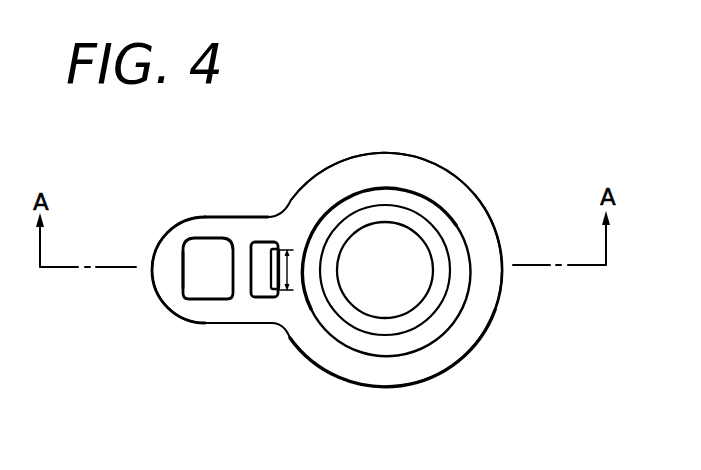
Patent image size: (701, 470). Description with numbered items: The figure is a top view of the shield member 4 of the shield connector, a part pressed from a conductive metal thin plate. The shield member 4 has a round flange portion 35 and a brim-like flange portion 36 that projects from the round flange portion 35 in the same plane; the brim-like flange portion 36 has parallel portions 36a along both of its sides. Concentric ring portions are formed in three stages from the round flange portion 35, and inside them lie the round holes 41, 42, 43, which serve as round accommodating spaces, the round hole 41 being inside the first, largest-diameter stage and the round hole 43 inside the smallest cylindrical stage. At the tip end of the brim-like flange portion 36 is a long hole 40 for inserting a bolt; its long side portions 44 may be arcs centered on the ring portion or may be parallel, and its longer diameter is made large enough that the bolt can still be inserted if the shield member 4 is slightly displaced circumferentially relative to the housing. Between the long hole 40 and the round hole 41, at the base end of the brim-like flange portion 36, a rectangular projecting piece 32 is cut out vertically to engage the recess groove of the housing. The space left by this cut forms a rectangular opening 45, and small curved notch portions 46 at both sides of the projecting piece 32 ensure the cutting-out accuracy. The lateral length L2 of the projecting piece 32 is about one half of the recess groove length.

The shield member 4 is at (480, 166).
The projecting piece 32 is at (259, 276).
The round flange portion 35 is at (490, 321).
The brim-like flange portion 36 is at (160, 298).
The parallel portions 36a is at (232, 217).
The long hole 40 is at (200, 289).
The round hole 41 is at (425, 338).
The round hole 42 is at (383, 332).
The round hole 43 is at (367, 311).
The long side portions 44 is at (233, 270).
The rectangular opening 45 is at (260, 242).
The curved notch portions 46 is at (277, 248).
The length of the projecting piece L2 is at (292, 250).